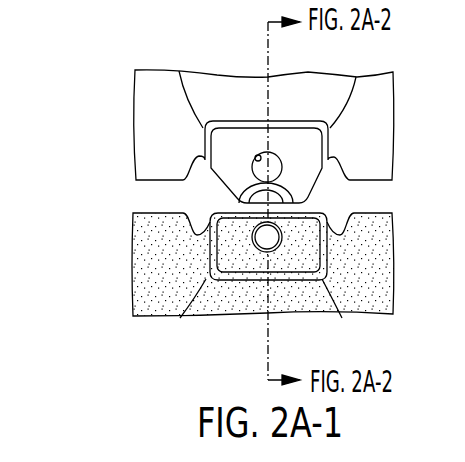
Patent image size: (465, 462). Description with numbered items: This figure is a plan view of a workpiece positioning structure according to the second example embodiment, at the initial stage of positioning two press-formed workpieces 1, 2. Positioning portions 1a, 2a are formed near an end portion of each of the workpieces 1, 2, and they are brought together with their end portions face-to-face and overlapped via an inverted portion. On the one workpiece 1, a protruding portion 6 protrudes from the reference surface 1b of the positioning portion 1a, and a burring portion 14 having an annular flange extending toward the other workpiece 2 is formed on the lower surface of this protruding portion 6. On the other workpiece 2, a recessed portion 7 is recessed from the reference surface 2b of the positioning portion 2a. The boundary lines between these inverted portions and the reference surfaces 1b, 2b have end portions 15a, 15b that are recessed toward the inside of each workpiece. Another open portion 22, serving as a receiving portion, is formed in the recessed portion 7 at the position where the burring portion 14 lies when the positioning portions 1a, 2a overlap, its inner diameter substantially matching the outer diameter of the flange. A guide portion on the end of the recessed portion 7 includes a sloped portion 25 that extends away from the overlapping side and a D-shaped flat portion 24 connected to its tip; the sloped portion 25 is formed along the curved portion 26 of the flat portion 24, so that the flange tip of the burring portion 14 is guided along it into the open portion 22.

The workpiece 1 is at (110, 324).
The positioning portion 1a is at (145, 267).
The reference surface 1b is at (152, 237).
The workpiece 2 is at (415, 58).
The positioning portion 2a is at (143, 163).
The reference surface 2b is at (148, 127).
The protruding portion 6 is at (293, 253).
The recessed portion 7 is at (290, 140).
The burring portion 14 is at (253, 257).
The end portion of boundary line 15a is at (180, 318).
The end portion of boundary line 15b is at (179, 71).
The other open portion 22 is at (256, 156).
The flat portion 24 is at (293, 200).
The sloped portion 25 is at (240, 197).
The curved portion 26 is at (276, 197).